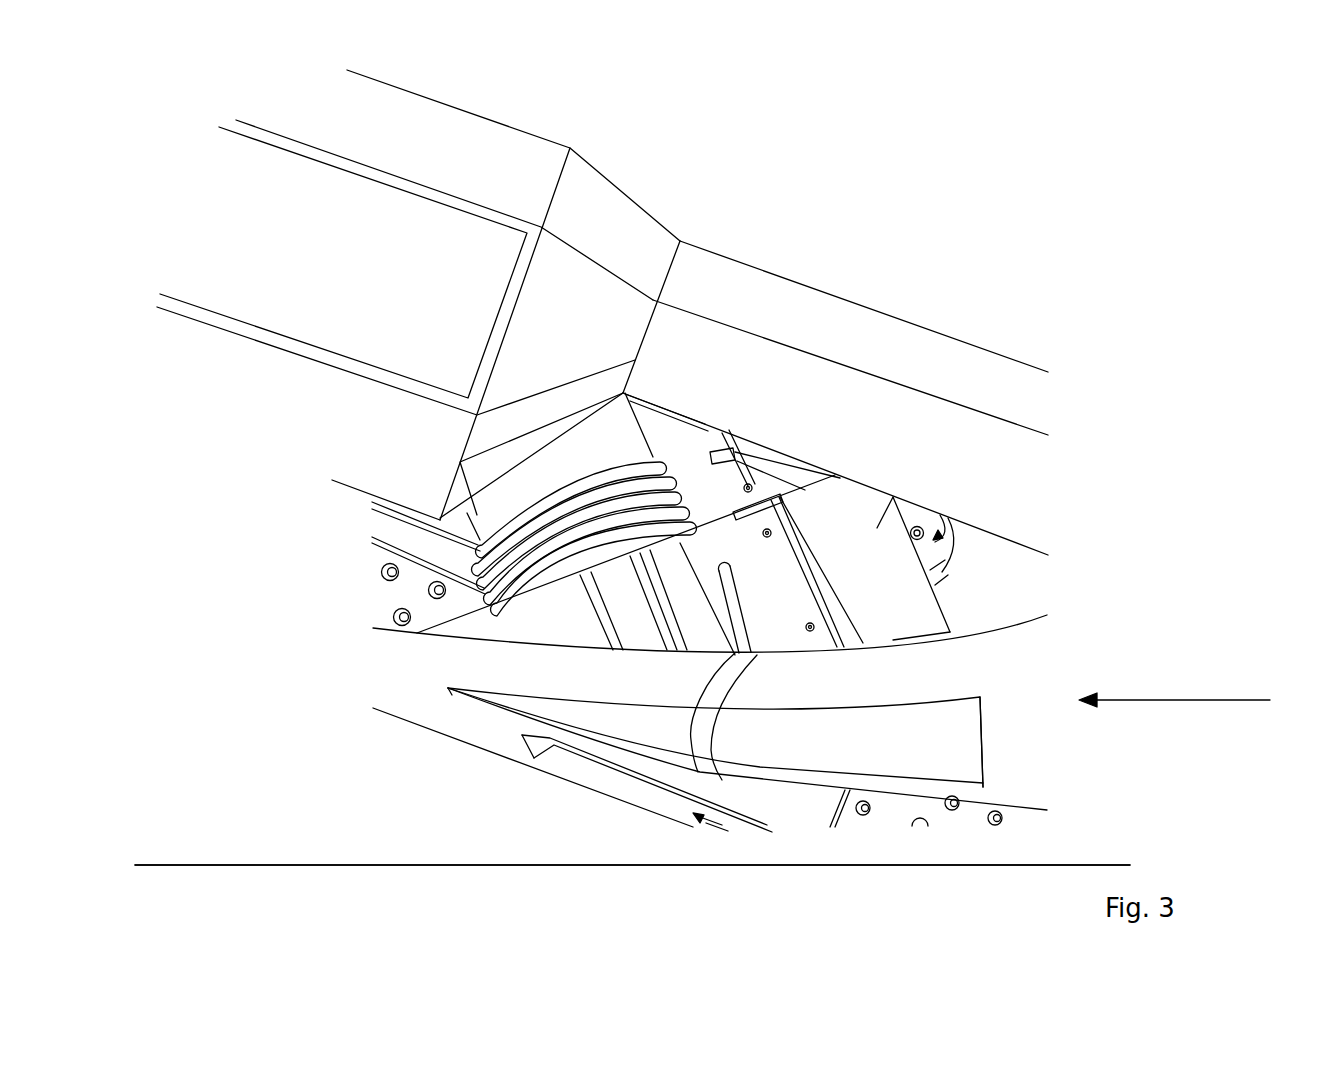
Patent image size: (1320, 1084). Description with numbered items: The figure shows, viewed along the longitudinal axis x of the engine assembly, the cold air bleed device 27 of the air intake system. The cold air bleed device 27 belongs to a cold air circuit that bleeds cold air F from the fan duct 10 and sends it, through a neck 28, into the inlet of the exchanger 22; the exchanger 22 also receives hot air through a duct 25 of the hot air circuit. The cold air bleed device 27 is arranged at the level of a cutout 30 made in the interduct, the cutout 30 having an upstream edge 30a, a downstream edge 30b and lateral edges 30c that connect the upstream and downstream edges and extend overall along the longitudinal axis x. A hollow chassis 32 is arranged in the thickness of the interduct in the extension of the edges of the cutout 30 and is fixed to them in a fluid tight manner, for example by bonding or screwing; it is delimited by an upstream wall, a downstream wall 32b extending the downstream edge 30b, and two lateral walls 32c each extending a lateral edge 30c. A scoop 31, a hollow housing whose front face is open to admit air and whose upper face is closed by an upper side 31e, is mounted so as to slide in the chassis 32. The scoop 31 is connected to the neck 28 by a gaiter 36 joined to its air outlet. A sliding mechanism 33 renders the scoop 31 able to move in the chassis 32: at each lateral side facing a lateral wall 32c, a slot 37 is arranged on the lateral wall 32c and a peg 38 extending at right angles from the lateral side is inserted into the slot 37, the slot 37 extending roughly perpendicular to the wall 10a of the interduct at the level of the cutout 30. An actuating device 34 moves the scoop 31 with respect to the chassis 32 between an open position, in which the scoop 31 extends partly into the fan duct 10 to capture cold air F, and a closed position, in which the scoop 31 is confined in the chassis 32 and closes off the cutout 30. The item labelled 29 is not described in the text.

The fan duct 10 is at (593, 827).
The wall of the interduct 10a is at (1040, 702).
The exchanger 22 is at (215, 400).
The duct 25 is at (902, 357).
The cold air bleed device 27 is at (983, 593).
The neck 28 is at (440, 518).
The bracket 29 is at (893, 583).
The cutout 30 is at (977, 800).
The upstream edge 30a is at (983, 755).
The downstream edge 30b is at (443, 690).
The lateral edges 30c is at (533, 697).
The scoop 31 is at (757, 653).
The upper side 31e is at (884, 745).
The chassis 32 is at (953, 512).
The downstream wall 32b is at (417, 633).
The lateral walls 32c is at (877, 528).
The sliding mechanism 33 is at (743, 602).
The actuating device 34 is at (728, 462).
The gaiter 36 is at (643, 455).
The slot 37 is at (755, 622).
The peg 38 is at (722, 566).
The longitudinal axis x is at (279, 866).
The cold air F is at (1222, 697).